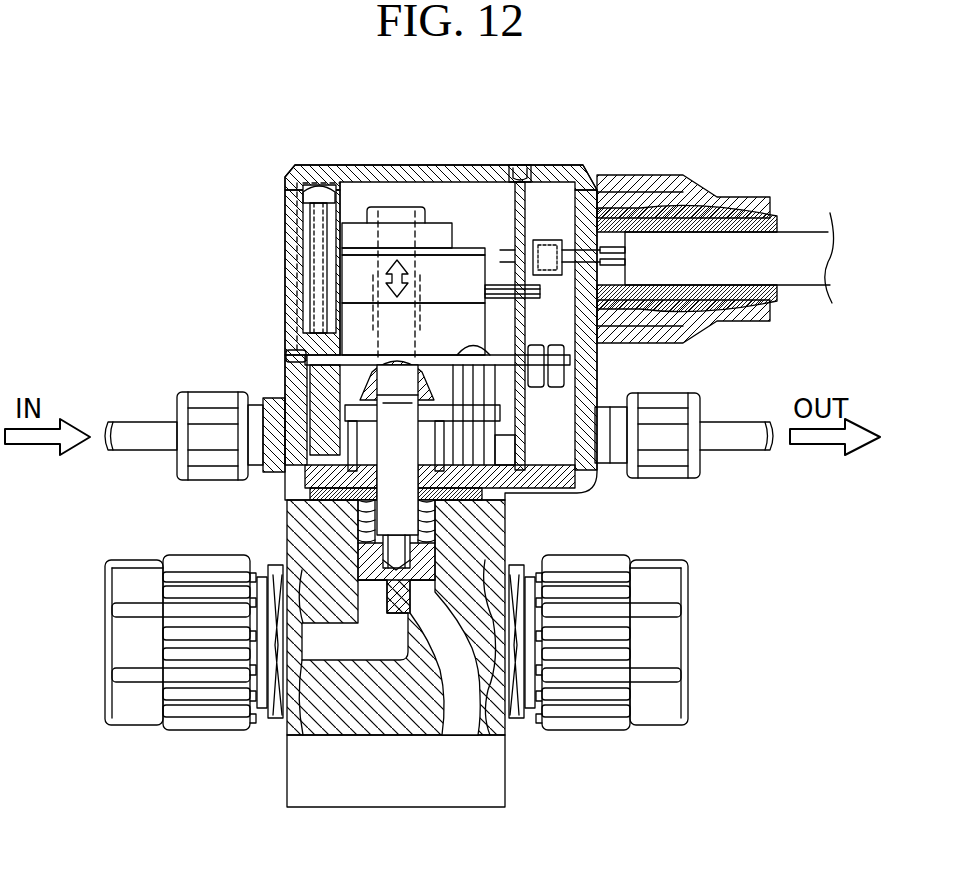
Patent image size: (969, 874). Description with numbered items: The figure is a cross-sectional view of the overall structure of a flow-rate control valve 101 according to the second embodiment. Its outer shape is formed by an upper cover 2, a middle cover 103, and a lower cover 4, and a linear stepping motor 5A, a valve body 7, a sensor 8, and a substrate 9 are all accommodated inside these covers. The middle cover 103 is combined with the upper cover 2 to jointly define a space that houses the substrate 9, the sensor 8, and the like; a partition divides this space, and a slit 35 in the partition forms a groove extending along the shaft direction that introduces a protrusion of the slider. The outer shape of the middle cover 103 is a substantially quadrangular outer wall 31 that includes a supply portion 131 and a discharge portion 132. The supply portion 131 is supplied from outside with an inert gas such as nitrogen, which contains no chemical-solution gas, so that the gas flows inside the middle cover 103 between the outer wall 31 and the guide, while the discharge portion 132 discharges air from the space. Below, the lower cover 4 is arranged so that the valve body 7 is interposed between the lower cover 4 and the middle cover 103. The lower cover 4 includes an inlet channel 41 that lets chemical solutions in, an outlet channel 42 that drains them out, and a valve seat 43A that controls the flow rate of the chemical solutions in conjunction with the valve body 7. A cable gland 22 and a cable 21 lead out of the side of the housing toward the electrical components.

The flow-rate control valve 101 is at (195, 95).
The middle cover 103 is at (132, 308).
The upper cover 2 is at (285, 245).
The linear stepping motor 5A is at (437, 232).
The substrate 9 is at (530, 205).
The cable gland 22 is at (642, 178).
The cable 21 is at (802, 236).
The slit 35 is at (296, 356).
The supply portion 131 is at (172, 385).
The discharge portion 132 is at (668, 480).
The outer wall 31 is at (288, 388).
The sensor 8 is at (506, 447).
The valve body 7 is at (357, 548).
The valve seat 43A is at (428, 608).
The inlet channel 41 is at (325, 648).
The outlet channel 42 is at (475, 653).
The lower cover 4 is at (396, 615).